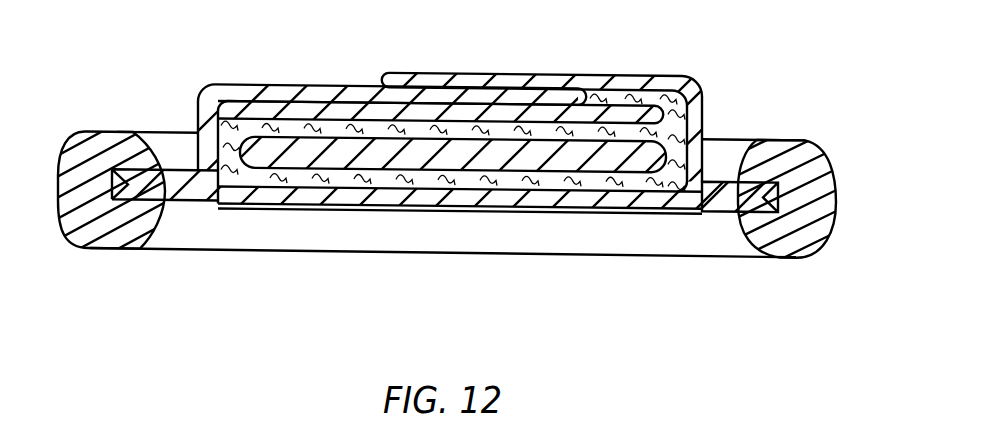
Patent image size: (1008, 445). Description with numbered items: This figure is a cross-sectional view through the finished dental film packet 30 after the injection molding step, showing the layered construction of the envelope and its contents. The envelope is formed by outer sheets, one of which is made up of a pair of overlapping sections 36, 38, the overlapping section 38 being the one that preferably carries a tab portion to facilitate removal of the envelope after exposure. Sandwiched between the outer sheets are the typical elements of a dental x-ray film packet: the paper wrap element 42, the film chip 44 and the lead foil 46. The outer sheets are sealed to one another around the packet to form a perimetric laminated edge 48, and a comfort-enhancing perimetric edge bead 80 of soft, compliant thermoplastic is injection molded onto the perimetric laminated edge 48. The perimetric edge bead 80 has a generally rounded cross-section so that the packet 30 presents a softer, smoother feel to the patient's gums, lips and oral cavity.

The dental film packet 30 is at (513, 58).
The overlapping section 36 is at (238, 89).
The overlapping section 38 is at (628, 78).
The paper wrap element 42 is at (262, 180).
The film chip 44 is at (558, 162).
The lead foil 46 is at (314, 106).
The perimetric laminated edge 48 is at (723, 213).
The perimetric edge bead 80 is at (387, 240).